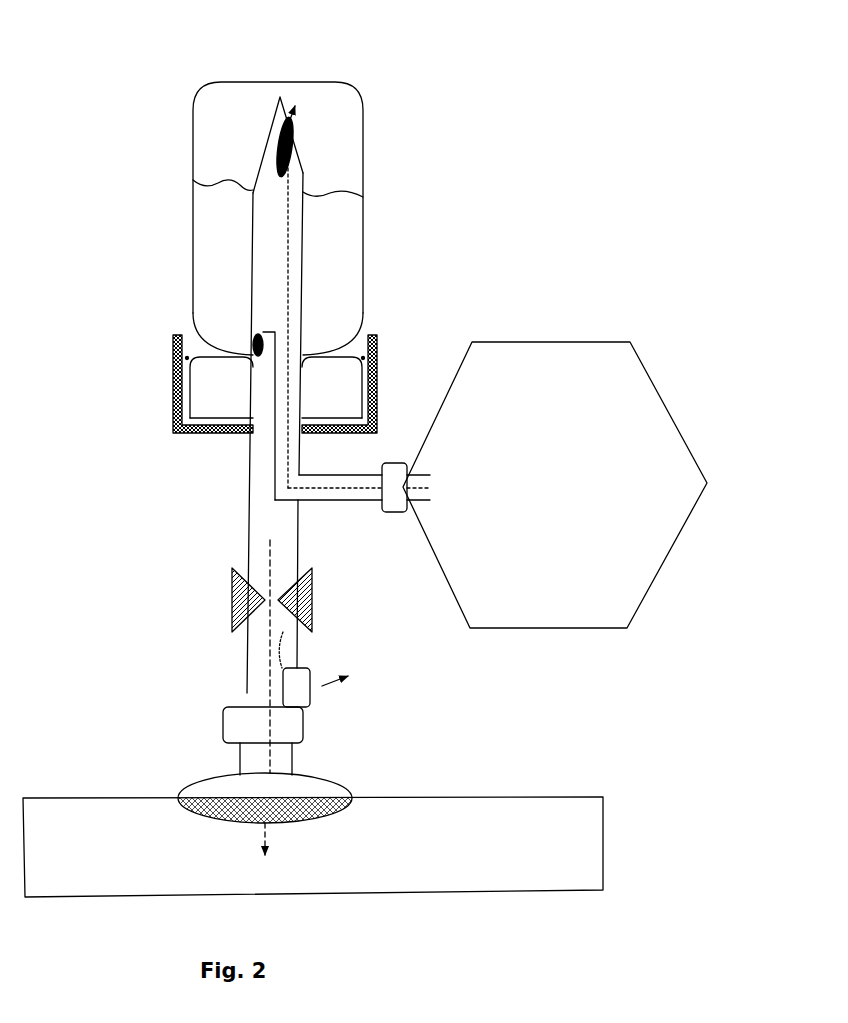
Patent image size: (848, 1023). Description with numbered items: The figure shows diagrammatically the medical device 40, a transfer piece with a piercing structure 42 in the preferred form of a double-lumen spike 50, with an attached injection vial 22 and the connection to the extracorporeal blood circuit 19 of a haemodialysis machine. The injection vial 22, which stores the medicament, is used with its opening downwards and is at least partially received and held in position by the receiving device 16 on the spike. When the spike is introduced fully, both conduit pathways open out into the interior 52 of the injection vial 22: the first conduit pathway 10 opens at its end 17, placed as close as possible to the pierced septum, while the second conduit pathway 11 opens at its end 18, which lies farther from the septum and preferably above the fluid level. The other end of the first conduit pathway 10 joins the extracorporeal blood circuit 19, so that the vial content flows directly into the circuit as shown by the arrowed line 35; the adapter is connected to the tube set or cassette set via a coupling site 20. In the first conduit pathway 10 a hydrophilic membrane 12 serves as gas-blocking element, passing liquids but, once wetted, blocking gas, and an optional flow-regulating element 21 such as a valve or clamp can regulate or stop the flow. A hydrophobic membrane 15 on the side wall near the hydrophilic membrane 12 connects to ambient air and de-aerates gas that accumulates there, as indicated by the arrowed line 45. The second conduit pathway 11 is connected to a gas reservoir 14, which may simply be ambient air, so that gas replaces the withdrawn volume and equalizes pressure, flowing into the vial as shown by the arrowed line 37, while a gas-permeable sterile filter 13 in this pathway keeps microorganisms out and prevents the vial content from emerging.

The first conduit pathway 10 is at (257, 518).
The second conduit pathway 11 is at (300, 455).
The hydrophilic membrane 12 is at (303, 727).
The gas-permeable sterile filter 13 is at (395, 463).
The gas reservoir 14 is at (555, 485).
The hydrophobic membrane 15 is at (310, 676).
The receiving device 16 is at (175, 372).
The end of the first conduit pathway 17 is at (253, 345).
The end of the second conduit pathway 18 is at (300, 157).
The extracorporeal blood circuit 19 is at (313, 847).
The coupling site 20 is at (348, 788).
The flow-regulating element 21 is at (232, 616).
The injection vial 22 is at (363, 222).
The arrowed line 35 is at (267, 758).
The arrowed line 37 is at (288, 268).
The medical device 40 is at (592, 452).
The piercing structure 42 is at (223, 230).
The arrowed line 45 is at (315, 690).
The double-lumen spike 50 is at (271, 192).
The interior of the injection vial 52 is at (325, 112).